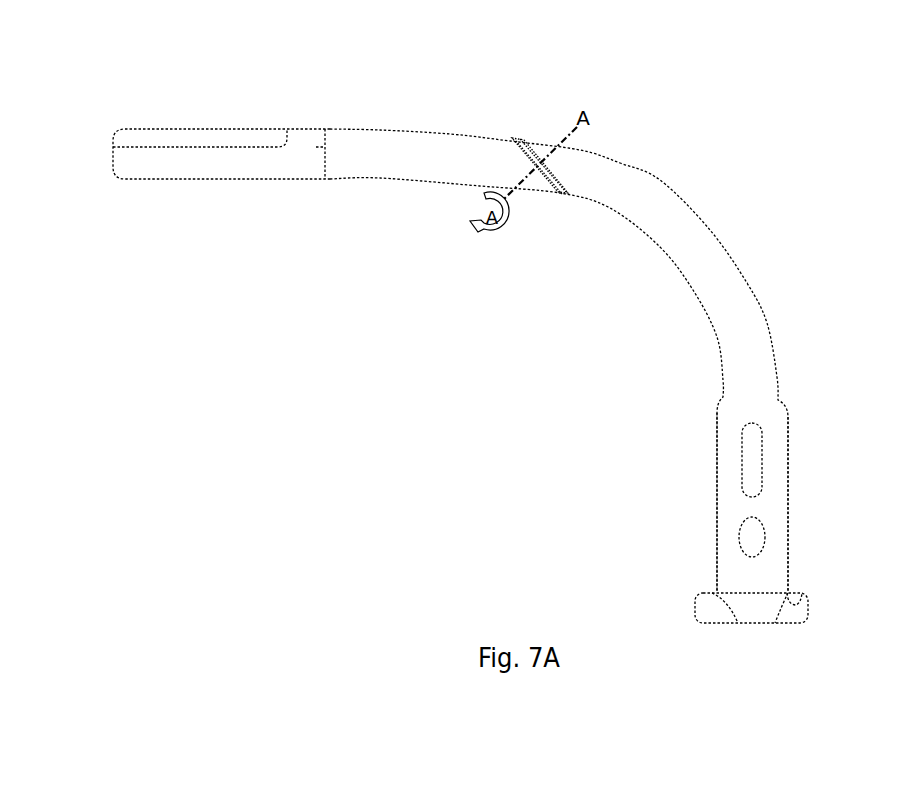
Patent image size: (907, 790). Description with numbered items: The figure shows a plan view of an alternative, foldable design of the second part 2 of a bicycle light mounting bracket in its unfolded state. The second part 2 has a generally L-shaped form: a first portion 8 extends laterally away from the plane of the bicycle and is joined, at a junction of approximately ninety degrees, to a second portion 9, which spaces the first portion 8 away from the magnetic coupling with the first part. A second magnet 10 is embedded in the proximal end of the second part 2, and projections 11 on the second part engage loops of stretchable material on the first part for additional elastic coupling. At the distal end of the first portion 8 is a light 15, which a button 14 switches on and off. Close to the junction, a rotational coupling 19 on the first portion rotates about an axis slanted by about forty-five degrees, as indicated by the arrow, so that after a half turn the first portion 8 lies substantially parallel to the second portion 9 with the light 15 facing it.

The second part 2 is at (508, 335).
The first portion 8 is at (392, 160).
The second portion 9 is at (732, 503).
The second magnet 10 is at (745, 602).
The projections 11 is at (752, 608).
The button 14 is at (752, 537).
The light 15 is at (220, 138).
The rotational coupling 19 is at (537, 165).